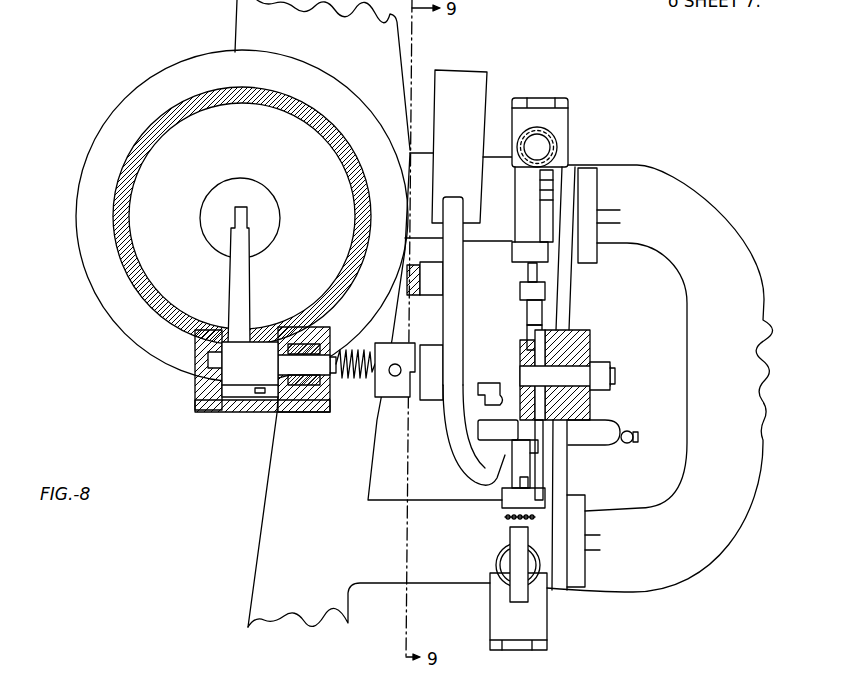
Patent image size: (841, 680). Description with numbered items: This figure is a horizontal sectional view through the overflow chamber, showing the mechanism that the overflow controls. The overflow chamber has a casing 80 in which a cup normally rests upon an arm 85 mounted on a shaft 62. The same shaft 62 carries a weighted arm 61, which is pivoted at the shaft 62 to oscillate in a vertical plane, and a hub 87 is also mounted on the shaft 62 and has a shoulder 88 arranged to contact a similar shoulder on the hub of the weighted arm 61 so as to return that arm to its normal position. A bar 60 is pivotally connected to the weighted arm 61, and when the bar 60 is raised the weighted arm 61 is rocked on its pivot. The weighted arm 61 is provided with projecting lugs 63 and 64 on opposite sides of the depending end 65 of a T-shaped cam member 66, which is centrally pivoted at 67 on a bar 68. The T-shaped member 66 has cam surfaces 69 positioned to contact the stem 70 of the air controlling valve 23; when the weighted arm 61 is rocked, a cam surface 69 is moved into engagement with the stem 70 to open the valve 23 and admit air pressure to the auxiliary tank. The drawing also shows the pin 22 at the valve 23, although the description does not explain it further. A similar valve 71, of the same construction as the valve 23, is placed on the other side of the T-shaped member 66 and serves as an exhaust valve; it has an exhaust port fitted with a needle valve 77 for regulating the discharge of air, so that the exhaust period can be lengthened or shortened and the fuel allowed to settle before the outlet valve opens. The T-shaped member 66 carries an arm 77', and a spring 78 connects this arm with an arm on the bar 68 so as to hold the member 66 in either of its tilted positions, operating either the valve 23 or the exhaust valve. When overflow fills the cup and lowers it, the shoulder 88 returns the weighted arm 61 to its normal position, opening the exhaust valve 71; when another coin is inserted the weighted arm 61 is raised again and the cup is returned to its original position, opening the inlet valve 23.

The casing 80 is at (348, 169).
The arm 85 is at (242, 277).
The shaft 62 is at (330, 404).
The hub 87 is at (395, 398).
The bar 60 is at (424, 292).
The shoulder 88 is at (420, 344).
The weighted arm 61 is at (459, 146).
The air controlling valve 23 is at (545, 123).
The pivot pin 22 is at (551, 150).
The stem 70 is at (528, 271).
The cam surfaces 69 is at (520, 284).
The T-shaped cam member 66 is at (527, 310).
The pivot 67 is at (535, 345).
The lug 64 is at (490, 390).
The depending end 65 is at (498, 430).
The lug 63 is at (483, 477).
The needle valve 77 is at (494, 530).
The arm 77' is at (610, 420).
The spring 78 is at (633, 434).
The bar 68 is at (575, 478).
The valve 71 is at (495, 610).